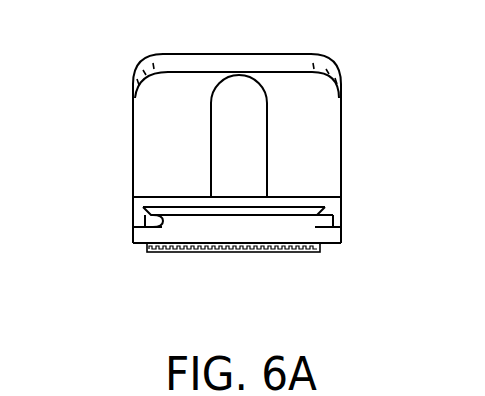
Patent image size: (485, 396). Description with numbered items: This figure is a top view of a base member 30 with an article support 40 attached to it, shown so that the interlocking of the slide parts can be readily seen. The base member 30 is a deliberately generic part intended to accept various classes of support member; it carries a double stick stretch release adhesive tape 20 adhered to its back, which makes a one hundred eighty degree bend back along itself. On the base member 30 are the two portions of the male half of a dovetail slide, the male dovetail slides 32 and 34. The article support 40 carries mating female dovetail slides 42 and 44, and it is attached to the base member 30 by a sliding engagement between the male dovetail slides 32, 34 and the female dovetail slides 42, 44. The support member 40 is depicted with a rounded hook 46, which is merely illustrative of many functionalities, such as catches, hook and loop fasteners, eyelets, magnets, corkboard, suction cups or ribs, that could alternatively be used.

The double stick stretch release adhesive tape 20 is at (162, 253).
The base member 30 is at (300, 230).
The male dovetail slide 32 is at (137, 242).
The male dovetail slide 34 is at (315, 212).
The article support 40 is at (152, 195).
The female dovetail slide 42 is at (137, 211).
The female dovetail slide 44 is at (333, 218).
The rounded hook 46 is at (283, 84).